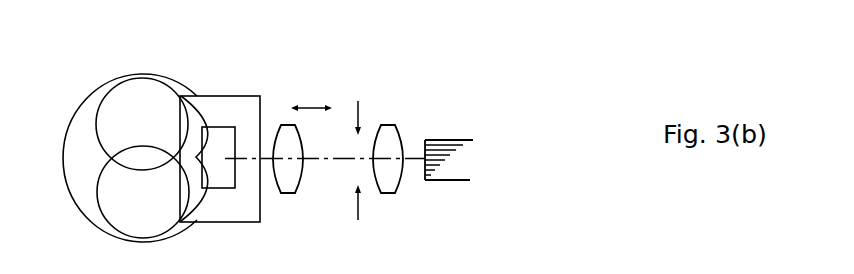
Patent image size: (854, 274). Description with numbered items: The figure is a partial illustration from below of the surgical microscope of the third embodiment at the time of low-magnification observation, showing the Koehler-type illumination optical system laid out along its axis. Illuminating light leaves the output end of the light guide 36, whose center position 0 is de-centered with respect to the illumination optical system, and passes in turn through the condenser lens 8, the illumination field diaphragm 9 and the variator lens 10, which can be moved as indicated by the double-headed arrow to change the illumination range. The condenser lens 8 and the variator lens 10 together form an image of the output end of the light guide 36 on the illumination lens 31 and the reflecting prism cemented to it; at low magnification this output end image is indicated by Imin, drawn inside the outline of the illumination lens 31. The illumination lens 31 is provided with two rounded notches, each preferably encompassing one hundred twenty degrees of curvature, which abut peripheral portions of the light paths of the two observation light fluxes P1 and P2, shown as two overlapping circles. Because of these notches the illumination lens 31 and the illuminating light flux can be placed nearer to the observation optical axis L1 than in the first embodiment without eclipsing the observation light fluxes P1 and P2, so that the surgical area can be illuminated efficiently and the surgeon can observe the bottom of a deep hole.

The observation optical axis L1 is at (145, 122).
The observation light flux P1 is at (108, 90).
The observation light flux P2 is at (106, 218).
The illumination lens 31 is at (249, 222).
The output end image of the light guide at low magnification Imin is at (222, 127).
The center position of the output end of the light guide 0 is at (423, 158).
The variator lens 10 is at (291, 197).
The illumination field diaphragm 9 is at (359, 226).
The condenser lens 8 is at (389, 198).
The light guide 36 is at (472, 135).